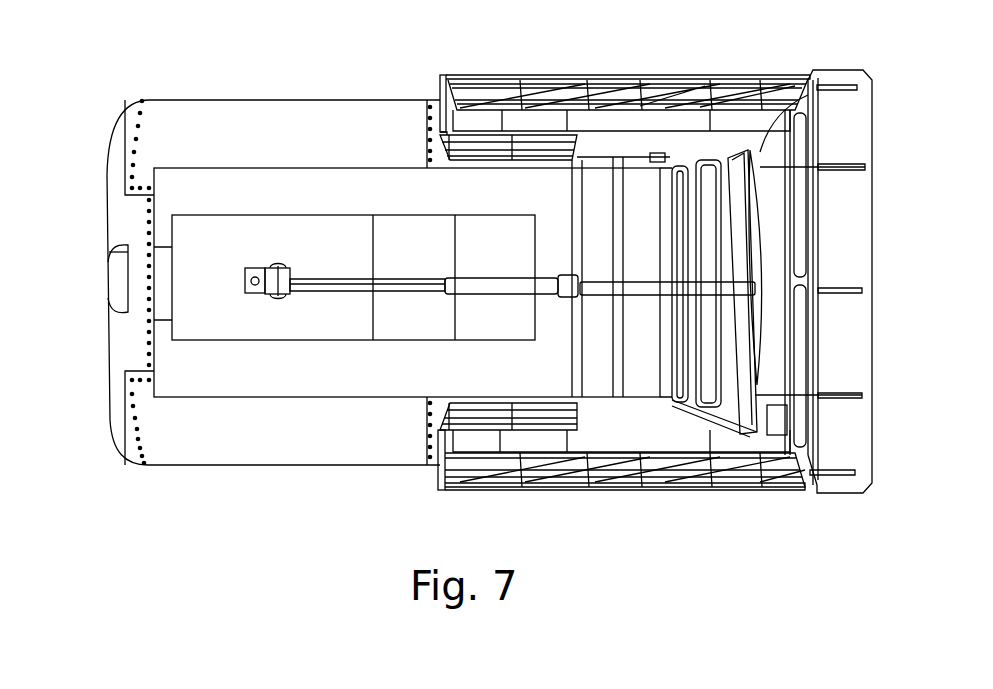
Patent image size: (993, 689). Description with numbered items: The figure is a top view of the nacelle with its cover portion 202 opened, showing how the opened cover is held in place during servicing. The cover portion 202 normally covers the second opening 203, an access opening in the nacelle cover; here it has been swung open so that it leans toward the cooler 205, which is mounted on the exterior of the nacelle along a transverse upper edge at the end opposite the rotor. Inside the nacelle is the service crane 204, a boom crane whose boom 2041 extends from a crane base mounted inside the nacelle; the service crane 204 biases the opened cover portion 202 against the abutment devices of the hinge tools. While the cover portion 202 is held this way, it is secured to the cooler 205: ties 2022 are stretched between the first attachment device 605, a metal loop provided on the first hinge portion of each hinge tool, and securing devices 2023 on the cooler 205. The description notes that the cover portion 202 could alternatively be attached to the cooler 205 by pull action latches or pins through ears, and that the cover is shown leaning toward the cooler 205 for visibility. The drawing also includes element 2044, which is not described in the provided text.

The cover portion 202 is at (732, 190).
The second opening 203 is at (634, 179).
The service crane 204 is at (332, 278).
The cooler 205 is at (815, 95).
The first attachment device 605 is at (765, 405).
The ties 2022 is at (805, 152).
The securing devices 2023 is at (817, 167).
The boom 2041 is at (412, 278).
The drive shaft 2044 is at (750, 260).